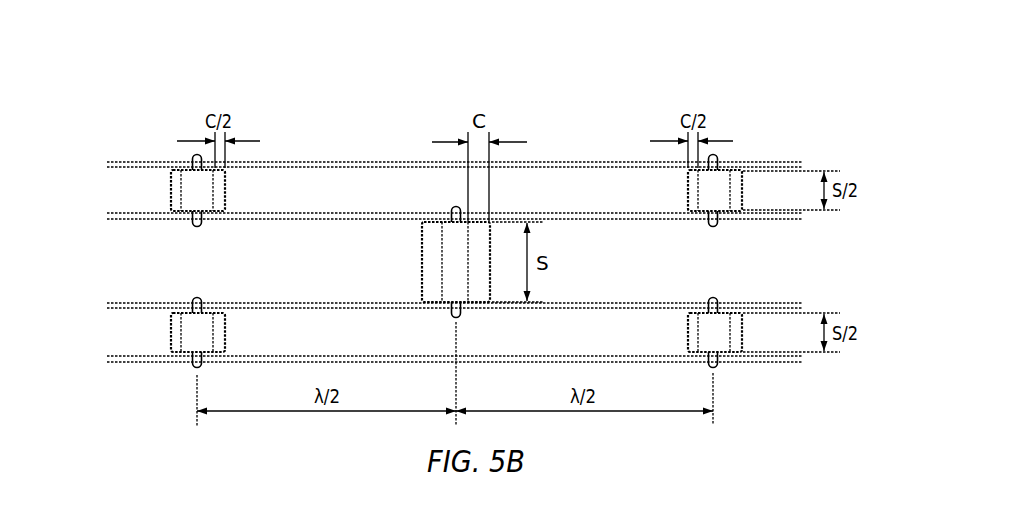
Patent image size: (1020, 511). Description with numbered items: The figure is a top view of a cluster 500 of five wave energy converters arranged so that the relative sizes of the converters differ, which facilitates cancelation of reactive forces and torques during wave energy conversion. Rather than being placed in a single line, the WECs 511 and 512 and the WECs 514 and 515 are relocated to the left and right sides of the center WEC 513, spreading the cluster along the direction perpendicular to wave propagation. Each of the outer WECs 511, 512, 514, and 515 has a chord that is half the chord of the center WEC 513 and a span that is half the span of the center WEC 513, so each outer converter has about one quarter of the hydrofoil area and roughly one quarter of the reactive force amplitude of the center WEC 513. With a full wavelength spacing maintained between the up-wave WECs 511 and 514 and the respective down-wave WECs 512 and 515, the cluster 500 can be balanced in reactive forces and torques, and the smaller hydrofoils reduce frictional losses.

The cluster 500 is at (316, 80).
The wave energy converter 511 is at (177, 205).
The wave energy converter 512 is at (688, 205).
The center wave energy converter 513 is at (421, 272).
The wave energy converter 514 is at (185, 343).
The wave energy converter 515 is at (697, 343).